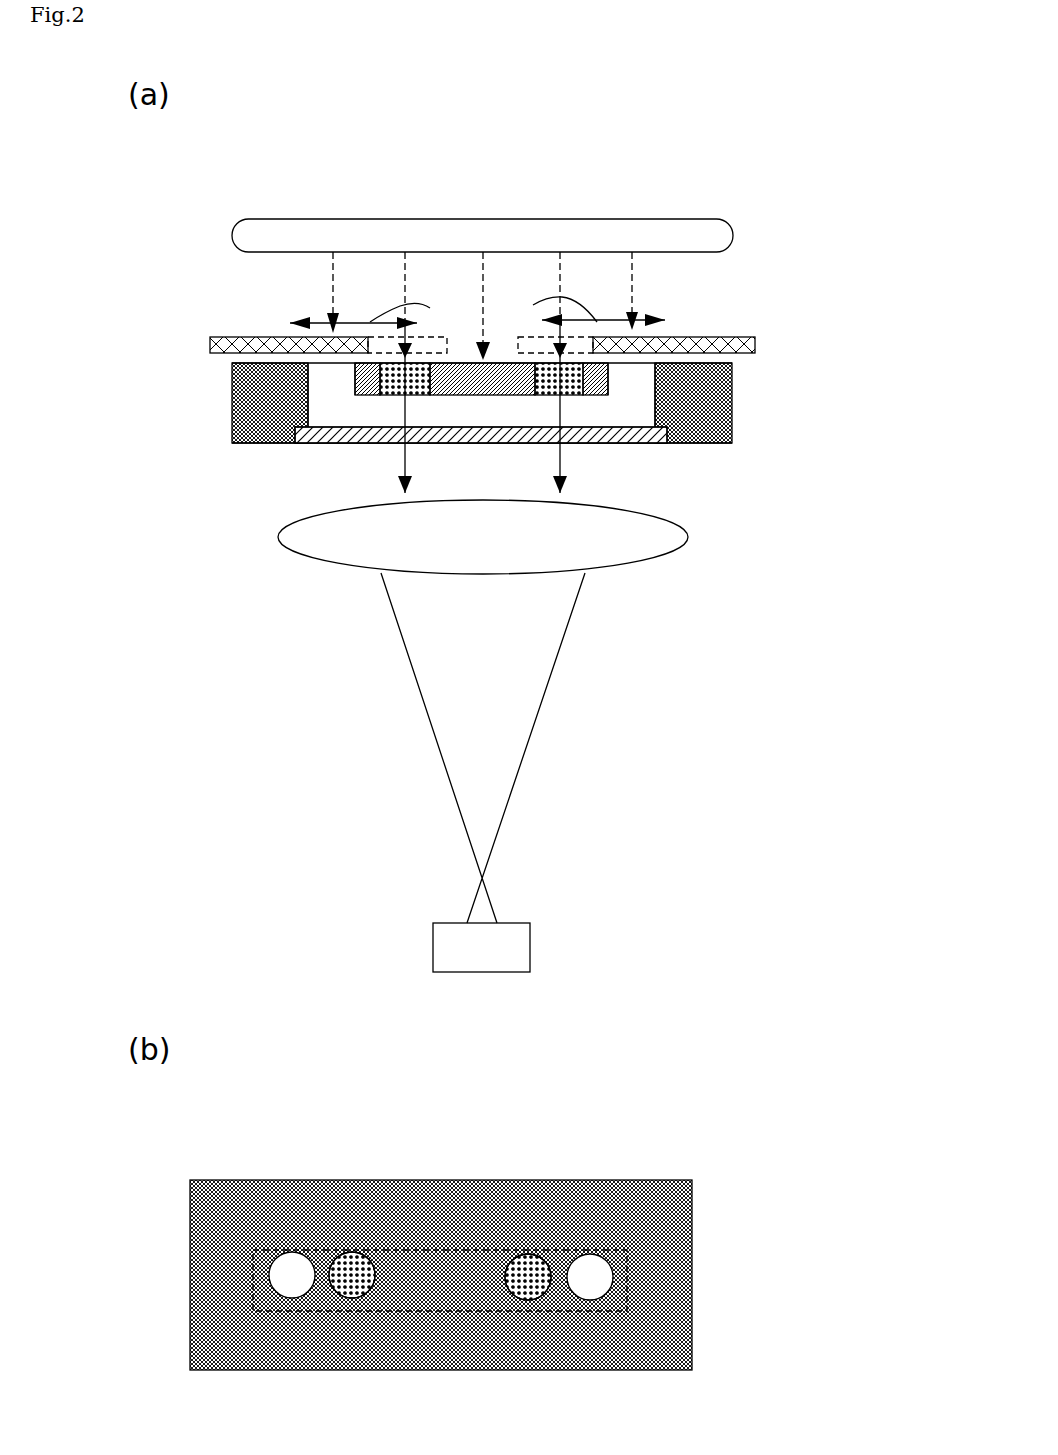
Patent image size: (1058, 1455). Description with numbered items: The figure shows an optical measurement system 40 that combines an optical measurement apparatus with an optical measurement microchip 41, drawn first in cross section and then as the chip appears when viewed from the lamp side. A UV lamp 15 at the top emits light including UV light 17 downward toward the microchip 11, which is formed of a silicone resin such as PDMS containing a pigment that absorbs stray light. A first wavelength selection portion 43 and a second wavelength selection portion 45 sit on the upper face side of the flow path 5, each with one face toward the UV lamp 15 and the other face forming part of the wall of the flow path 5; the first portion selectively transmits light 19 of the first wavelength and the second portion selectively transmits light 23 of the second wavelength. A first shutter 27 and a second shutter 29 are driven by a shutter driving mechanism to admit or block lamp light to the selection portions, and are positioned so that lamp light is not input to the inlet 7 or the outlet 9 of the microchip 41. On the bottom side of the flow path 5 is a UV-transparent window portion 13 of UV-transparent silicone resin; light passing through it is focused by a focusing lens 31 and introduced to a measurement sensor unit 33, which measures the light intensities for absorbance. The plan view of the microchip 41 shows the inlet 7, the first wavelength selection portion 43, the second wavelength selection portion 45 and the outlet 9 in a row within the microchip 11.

The flow path 5 is at (732, 443).
The inlet 7 is at (328, 363).
The outlet 9 is at (637, 368).
The microchip 11 is at (270, 447).
The UV-transparent window portion 13 is at (605, 443).
The UV lamp 15 is at (277, 233).
The UV light 17 is at (635, 277).
The light having a first wavelength 19 is at (400, 450).
The light having a second wavelength 23 is at (560, 458).
The first shutter 27 is at (278, 337).
The second shutter 29 is at (690, 335).
The focusing lens 31 is at (623, 537).
The measurement sensor unit 33 is at (507, 950).
The optical measurement system 40 is at (640, 167).
The optical measurement microchip 41 is at (780, 393).
The first wavelength selection portion 43 is at (380, 395).
The second wavelength selection portion 45 is at (583, 397).